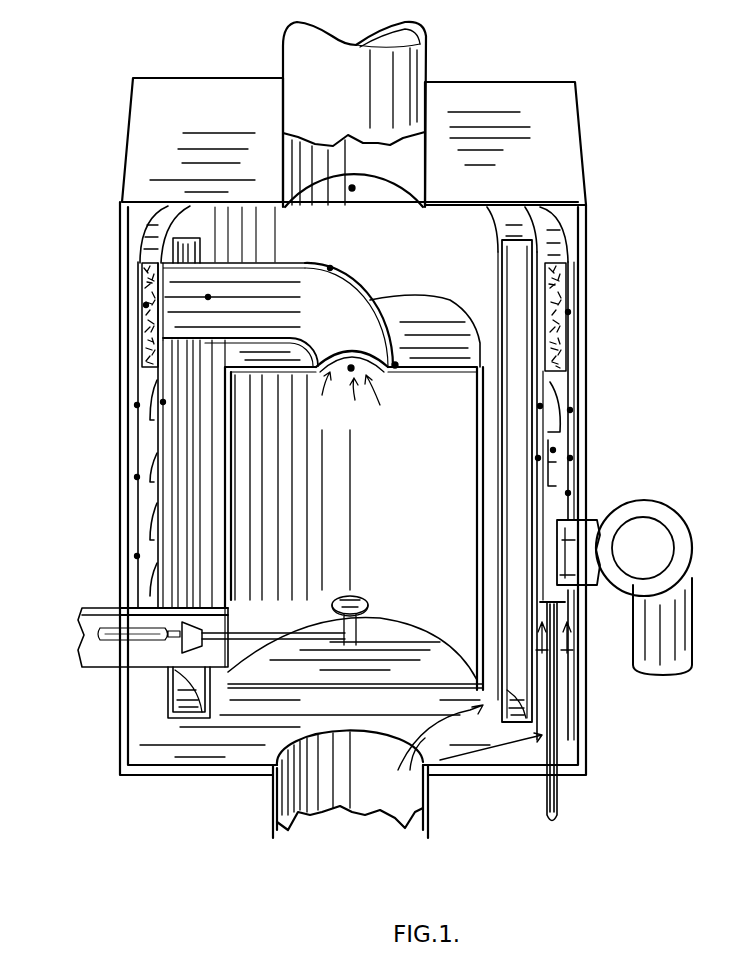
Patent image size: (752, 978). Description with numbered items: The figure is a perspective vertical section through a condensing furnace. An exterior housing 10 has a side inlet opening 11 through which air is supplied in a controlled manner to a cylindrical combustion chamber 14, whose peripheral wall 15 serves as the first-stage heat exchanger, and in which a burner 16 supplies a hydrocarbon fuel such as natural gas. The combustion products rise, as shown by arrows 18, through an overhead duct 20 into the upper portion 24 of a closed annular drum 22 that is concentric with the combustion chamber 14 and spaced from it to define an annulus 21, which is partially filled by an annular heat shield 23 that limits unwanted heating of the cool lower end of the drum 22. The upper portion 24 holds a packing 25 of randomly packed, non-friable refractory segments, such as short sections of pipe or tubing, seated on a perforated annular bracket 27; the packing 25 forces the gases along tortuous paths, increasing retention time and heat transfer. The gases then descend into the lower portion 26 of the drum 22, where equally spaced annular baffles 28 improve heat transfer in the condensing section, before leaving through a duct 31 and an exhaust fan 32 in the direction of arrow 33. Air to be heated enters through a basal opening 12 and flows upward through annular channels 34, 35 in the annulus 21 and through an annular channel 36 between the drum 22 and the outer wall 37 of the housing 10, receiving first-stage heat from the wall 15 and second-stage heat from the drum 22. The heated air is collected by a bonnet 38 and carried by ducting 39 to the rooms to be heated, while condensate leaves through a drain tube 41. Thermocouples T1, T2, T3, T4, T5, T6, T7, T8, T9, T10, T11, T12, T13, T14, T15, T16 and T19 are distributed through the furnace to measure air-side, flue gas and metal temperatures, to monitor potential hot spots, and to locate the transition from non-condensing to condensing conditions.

The exterior housing 10 is at (582, 348).
The side inlet opening 11 is at (82, 622).
The basal opening 12 is at (405, 800).
The cylindrical combustion chamber 14 is at (392, 493).
The peripheral wall 15 is at (238, 492).
The burner 16 is at (388, 586).
The arrows 18 is at (345, 385).
The overhead duct 20 is at (352, 284).
The annulus 21 is at (565, 412).
The closed annular drum 22 is at (128, 390).
The annular heat shield 23 is at (570, 455).
The upper portion 24 is at (148, 236).
The packing 25 is at (148, 318).
The lower portion 26 is at (128, 540).
The perforated annular bracket 27 is at (148, 305).
The annular baffle 28 is at (157, 432).
The duct 31 is at (592, 530).
The exhaust fan 32 is at (656, 500).
The arrow 33 is at (667, 716).
The annular channel 34 is at (425, 329).
The annular channel 35 is at (520, 300).
The annular channel 36 is at (575, 388).
The outer wall 37 is at (586, 262).
The bonnet 38 is at (560, 152).
The ducting 39 is at (412, 63).
The drain tube 41 is at (558, 815).
The thermocouple T1 is at (137, 556).
The thermocouple T2 is at (137, 477).
The thermocouple T3 is at (137, 405).
The thermocouple T4 is at (146, 305).
The thermocouple T5 is at (208, 297).
The thermocouple T6 is at (138, 430).
The thermocouple T7 is at (340, 256).
The thermocouple T8 is at (351, 368).
The thermocouple T9 is at (395, 365).
The thermocouple T10 is at (538, 458).
The thermocouple T11 is at (553, 452).
The thermocouple T12 is at (540, 406).
The thermocouple T13 is at (568, 312).
The thermocouple T14 is at (570, 410).
The thermocouple T15 is at (570, 458).
The thermocouple T16 is at (568, 495).
The thermocouple T19 is at (352, 188).